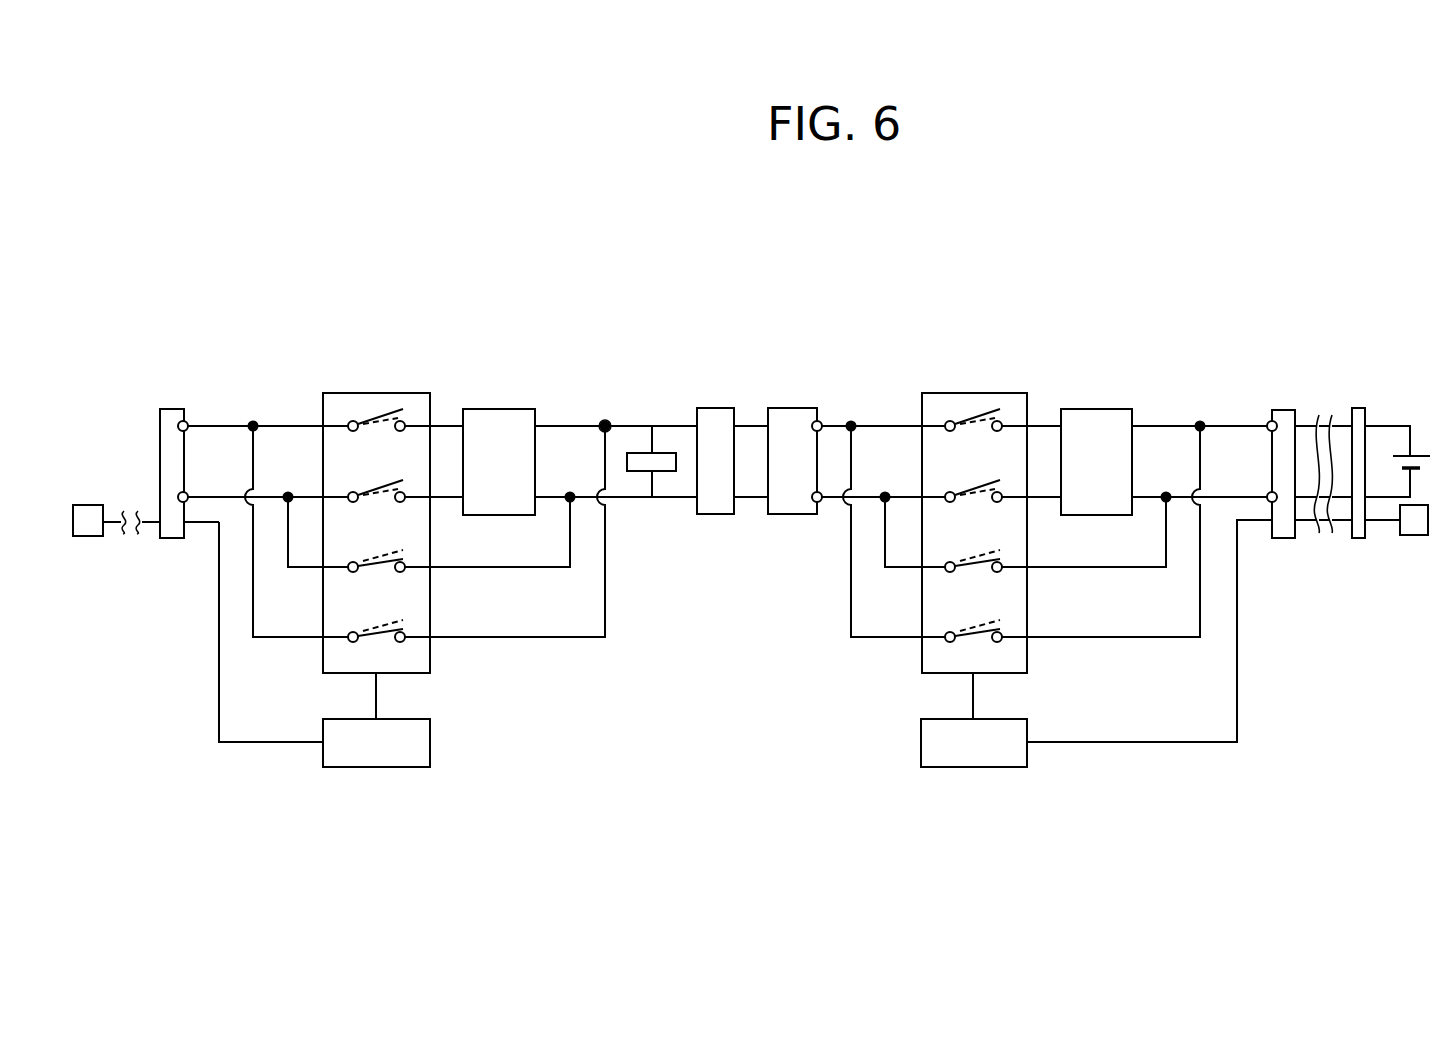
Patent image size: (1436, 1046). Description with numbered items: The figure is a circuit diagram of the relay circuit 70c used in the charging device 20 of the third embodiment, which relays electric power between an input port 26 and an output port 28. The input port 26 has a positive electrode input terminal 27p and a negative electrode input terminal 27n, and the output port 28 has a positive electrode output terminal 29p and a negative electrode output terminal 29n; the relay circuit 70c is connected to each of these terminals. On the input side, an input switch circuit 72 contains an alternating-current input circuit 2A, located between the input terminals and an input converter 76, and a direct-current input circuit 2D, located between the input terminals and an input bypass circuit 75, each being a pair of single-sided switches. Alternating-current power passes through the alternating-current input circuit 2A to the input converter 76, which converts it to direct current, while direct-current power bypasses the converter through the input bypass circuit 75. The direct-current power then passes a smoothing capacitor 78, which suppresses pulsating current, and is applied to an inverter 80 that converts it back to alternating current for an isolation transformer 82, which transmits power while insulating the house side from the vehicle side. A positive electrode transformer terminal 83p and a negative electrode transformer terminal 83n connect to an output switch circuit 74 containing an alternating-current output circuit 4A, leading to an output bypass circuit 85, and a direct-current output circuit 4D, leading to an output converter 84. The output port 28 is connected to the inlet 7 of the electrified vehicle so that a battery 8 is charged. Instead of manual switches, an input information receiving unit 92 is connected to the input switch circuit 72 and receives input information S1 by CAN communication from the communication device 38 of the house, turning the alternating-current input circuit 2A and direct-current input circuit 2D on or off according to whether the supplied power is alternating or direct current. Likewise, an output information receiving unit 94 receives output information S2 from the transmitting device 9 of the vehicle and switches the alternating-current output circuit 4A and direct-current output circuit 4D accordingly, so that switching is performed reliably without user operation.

The charging device 20 is at (178, 243).
The input port 26 is at (171, 408).
The positive electrode input terminal 27p is at (190, 421).
The negative electrode input terminal 27n is at (180, 503).
The communication device 38 is at (88, 503).
The input switch circuit 72 is at (376, 392).
The alternating-current input circuit 2A is at (342, 462).
The direct-current input circuit 2D is at (348, 602).
The input converter 76 is at (501, 410).
The relay circuit 70c is at (624, 405).
The capacitor 78 is at (660, 455).
The inverter 80 is at (716, 418).
The isolation transformer 82 is at (793, 420).
The positive electrode transformer terminal 83p is at (822, 421).
The negative electrode transformer terminal 83n is at (815, 503).
The output switch circuit 74 is at (975, 392).
The direct-current output circuit 4D is at (943, 462).
The alternating-current output circuit 4A is at (943, 602).
The output converter 84 is at (1102, 412).
The output port 28 is at (1285, 410).
The positive electrode output terminal 29p is at (1267, 421).
The negative electrode output terminal 29n is at (1277, 503).
The inlet 7 is at (1358, 408).
The battery 8 is at (1400, 455).
The transmitting device 9 is at (1416, 537).
The input information receiving unit 92 is at (378, 770).
The output information receiving unit 94 is at (975, 770).
The input information S1 is at (270, 745).
The output information S2 is at (1122, 745).
The input bypass circuit 75 is at (557, 661).
The output bypass circuit 85 is at (1108, 661).